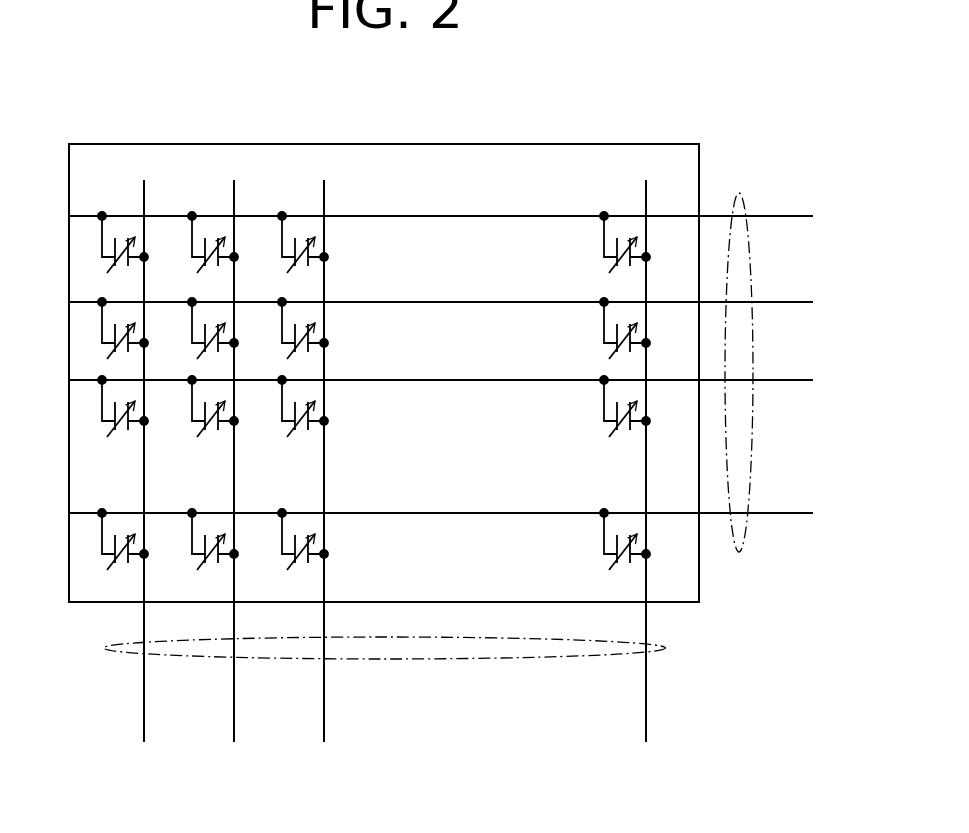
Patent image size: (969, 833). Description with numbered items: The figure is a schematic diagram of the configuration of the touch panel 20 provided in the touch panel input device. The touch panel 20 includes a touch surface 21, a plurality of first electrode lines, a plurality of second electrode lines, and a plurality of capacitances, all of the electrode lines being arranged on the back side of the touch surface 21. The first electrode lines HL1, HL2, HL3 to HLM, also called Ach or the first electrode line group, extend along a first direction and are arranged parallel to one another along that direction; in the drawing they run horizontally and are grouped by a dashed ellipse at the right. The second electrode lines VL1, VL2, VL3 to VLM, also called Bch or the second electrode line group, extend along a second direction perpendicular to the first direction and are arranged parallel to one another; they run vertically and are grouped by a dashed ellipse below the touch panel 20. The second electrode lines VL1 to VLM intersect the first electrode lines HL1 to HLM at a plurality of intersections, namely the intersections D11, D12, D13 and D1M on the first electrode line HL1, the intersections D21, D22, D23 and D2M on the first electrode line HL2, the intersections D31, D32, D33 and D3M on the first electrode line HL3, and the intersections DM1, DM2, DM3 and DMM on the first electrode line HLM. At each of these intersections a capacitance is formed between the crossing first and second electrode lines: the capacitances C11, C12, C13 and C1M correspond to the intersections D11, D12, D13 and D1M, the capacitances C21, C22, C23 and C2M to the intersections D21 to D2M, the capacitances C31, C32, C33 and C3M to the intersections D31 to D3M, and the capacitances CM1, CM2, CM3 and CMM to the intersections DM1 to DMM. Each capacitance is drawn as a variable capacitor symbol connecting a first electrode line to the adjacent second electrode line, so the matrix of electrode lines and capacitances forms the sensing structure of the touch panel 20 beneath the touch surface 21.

The touch panel 20 is at (383, 143).
The touch surface 21 is at (487, 173).
The first electrode line HL1 is at (800, 213).
The first electrode line HL2 is at (800, 299).
The first electrode line HL3 is at (800, 377).
The first electrode line HLM is at (800, 509).
The second electrode line VL1 is at (145, 733).
The second electrode line VL2 is at (235, 733).
The second electrode line VL3 is at (325, 733).
The second electrode line VLM is at (647, 733).
The intersection D11 is at (176, 181).
The intersection D12 is at (266, 181).
The intersection D13 is at (356, 181).
The intersection D1M is at (666, 181).
The intersection D21 is at (164, 260).
The intersection D22 is at (254, 260).
The intersection D23 is at (344, 260).
The intersection D2M is at (668, 260).
The intersection D31 is at (164, 341).
The intersection D32 is at (254, 341).
The intersection D33 is at (344, 341).
The intersection D3M is at (668, 341).
The intersection DM1 is at (166, 474).
The intersection DM2 is at (256, 474).
The intersection DM3 is at (346, 474).
The intersection DMM is at (670, 474).
The capacitance C11 is at (123, 256).
The capacitance C12 is at (213, 256).
The capacitance C13 is at (303, 256).
The capacitance C1M is at (625, 256).
The capacitance C21 is at (123, 341).
The capacitance C22 is at (213, 341).
The capacitance C23 is at (303, 341).
The capacitance C2M is at (625, 341).
The capacitance C31 is at (123, 421).
The capacitance C32 is at (213, 421).
The capacitance C33 is at (303, 421).
The capacitance C3M is at (625, 421).
The capacitance CM1 is at (123, 554).
The capacitance CM2 is at (213, 554).
The capacitance CM3 is at (303, 554).
The capacitance CMM is at (625, 554).